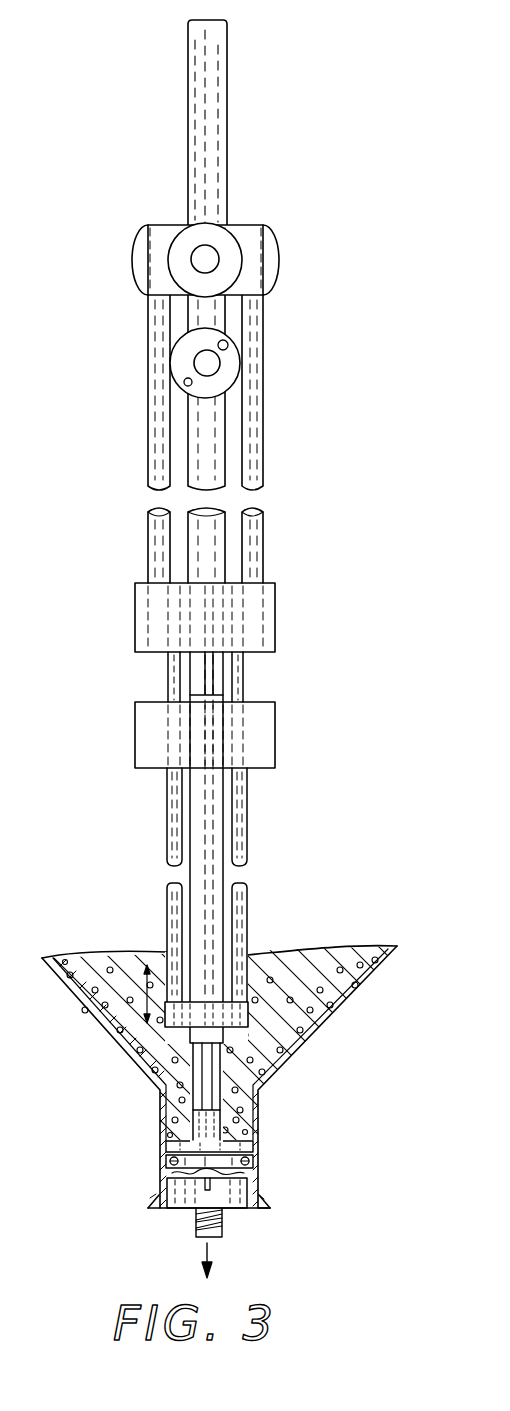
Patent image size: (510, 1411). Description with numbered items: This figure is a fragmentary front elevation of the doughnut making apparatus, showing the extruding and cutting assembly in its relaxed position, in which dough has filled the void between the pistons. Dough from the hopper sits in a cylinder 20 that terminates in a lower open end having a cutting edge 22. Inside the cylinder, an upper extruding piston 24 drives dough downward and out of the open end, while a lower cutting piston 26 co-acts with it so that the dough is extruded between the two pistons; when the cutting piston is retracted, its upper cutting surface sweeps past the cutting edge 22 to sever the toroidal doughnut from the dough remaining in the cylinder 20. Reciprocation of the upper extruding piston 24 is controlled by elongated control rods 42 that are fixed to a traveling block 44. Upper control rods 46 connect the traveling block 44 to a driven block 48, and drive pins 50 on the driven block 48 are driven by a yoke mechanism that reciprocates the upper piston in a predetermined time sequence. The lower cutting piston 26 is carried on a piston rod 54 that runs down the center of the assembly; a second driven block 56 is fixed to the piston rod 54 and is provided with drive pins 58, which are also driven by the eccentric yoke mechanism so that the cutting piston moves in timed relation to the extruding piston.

The cylinder 20 is at (258, 1192).
The cutting edge 22 is at (162, 1208).
The upper extruding piston 24 is at (250, 1015).
The lower cutting piston 26 is at (253, 1156).
The elongated control rods 42 is at (167, 935).
The traveling block 44 is at (135, 598).
The upper control rods 46 is at (148, 463).
The driven block 48 is at (132, 275).
The drive pins 50 is at (190, 258).
The piston rod 54 is at (193, 820).
The second driven block 56 is at (198, 390).
The drive pins 58 is at (196, 372).